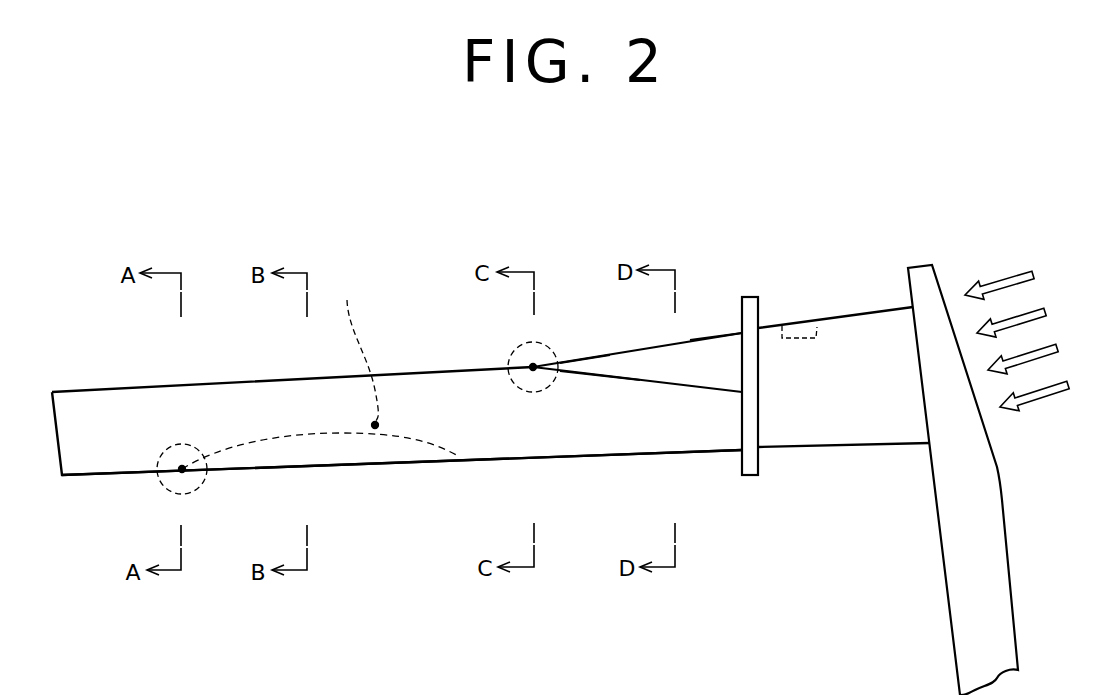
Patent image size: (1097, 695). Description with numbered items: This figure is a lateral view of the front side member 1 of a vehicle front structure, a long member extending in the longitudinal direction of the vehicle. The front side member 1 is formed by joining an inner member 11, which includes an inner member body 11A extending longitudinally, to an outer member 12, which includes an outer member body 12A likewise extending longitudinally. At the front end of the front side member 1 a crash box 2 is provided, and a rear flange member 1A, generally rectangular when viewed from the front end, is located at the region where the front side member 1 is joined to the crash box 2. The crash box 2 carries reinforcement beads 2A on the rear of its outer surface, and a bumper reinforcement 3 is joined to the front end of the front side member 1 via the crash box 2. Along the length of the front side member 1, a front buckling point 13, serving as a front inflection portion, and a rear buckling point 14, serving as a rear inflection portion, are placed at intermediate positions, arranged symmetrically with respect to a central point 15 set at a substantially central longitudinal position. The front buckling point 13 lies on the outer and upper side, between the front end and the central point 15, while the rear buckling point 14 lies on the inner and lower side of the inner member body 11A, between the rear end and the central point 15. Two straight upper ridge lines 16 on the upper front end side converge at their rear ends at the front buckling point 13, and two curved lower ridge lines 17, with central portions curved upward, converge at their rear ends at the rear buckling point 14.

The front side member 1 is at (397, 288).
The rear flange member 1A is at (750, 470).
The crash box 2 is at (832, 427).
The reinforcement beads 2A is at (806, 325).
The bumper reinforcement 3 is at (993, 628).
The inner member 11 is at (597, 462).
The inner member body 11A is at (522, 430).
The outer member 12 is at (702, 285).
The outer member body 12A is at (713, 335).
The front buckling point 13 is at (533, 367).
The rear buckling point 14 is at (180, 475).
The central point 15 is at (355, 349).
The upper ridge lines 16 is at (638, 378).
The lower ridge lines 17 is at (412, 442).